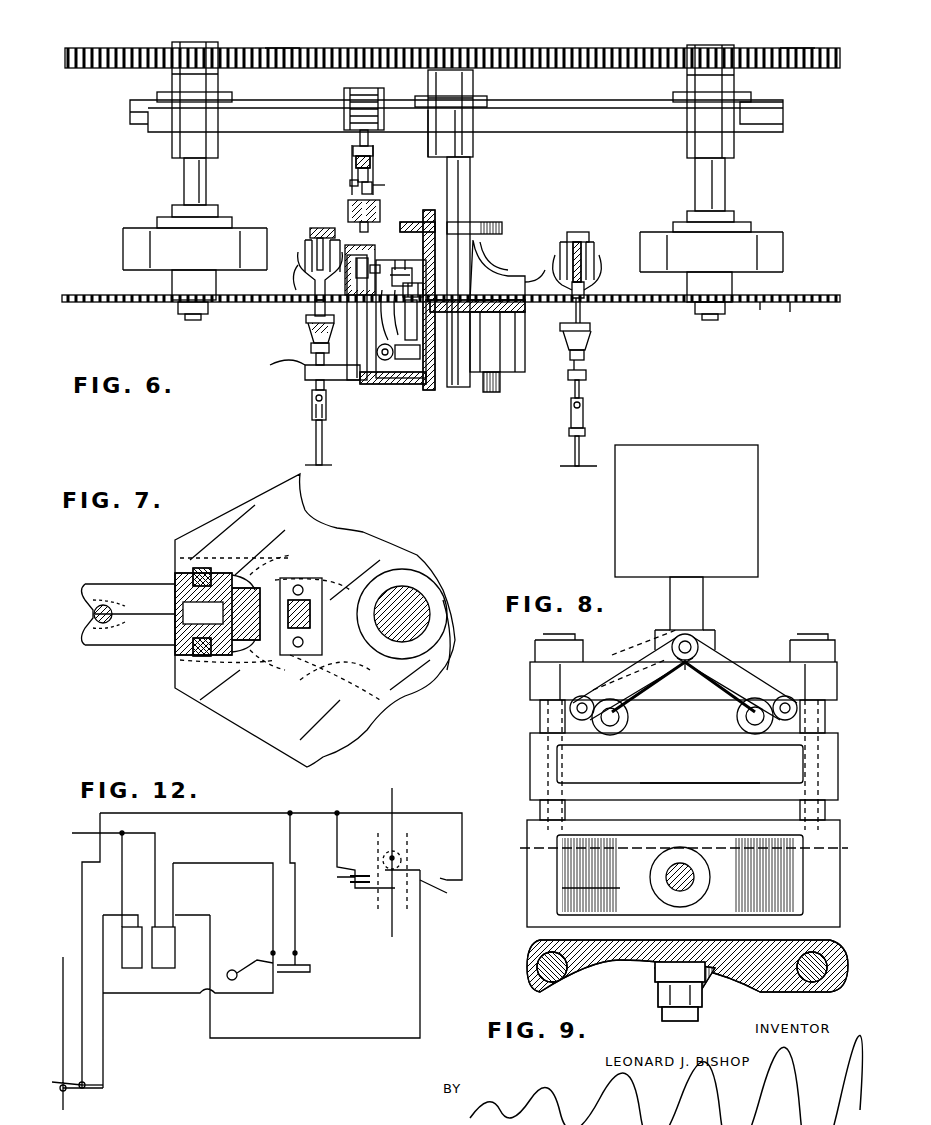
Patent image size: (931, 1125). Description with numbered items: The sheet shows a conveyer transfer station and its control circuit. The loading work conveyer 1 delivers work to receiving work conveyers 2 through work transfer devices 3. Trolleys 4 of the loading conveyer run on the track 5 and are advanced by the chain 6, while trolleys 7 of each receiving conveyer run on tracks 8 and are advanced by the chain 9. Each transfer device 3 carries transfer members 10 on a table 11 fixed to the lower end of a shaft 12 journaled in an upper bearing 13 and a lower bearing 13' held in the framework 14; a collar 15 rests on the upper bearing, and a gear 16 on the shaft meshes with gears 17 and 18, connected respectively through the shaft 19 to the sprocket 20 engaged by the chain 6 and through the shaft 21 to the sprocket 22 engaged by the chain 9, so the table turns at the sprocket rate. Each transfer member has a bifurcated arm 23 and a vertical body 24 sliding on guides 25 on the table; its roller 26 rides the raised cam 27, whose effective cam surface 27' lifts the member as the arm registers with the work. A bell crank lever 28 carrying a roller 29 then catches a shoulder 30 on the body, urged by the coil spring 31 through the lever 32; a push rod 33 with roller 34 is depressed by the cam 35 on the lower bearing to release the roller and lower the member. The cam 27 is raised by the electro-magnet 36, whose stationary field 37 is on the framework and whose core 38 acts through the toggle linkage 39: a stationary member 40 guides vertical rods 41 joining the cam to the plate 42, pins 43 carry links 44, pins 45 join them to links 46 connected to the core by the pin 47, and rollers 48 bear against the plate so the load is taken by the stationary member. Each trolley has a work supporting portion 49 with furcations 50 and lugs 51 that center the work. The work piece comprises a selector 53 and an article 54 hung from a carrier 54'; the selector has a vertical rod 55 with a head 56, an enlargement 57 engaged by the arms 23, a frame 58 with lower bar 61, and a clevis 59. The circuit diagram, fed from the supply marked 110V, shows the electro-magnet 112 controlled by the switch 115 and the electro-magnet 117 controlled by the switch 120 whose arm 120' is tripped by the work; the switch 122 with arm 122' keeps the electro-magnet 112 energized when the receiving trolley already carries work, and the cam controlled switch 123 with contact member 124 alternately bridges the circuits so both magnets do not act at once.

In FIG. 6, the loading work conveyer 1 is at (126, 195).
In FIG. 6, the receiving work conveyers 2 is at (780, 198).
In FIG. 6, the work transfer devices 3 is at (499, 205).
In FIG. 6, the trolleys of the loading conveyer 4 is at (300, 240).
In FIG. 6, the track 5 is at (320, 228).
In FIG. 6, the chain 6 is at (315, 310).
In FIG. 6, the trolleys of the receiving conveyers 7 is at (450, 300).
In FIG. 6, the tracks 8 is at (582, 242).
In FIG. 6, the chain 9 is at (584, 290).
In FIG. 8, the chain 9 is at (849, 849).
In FIG. 6, the transfer members 10 is at (493, 393).
In FIG. 7, the transfer members 10 is at (129, 578).
In FIG. 6, the table 11 is at (525, 306).
In FIG. 7, the table 11 is at (225, 540).
In FIG. 6, the shaft 12 is at (452, 387).
In FIG. 7, the shaft 12 is at (415, 613).
In FIG. 6, the upper bearing 13 is at (469, 133).
In FIG. 6, the lower bearing 13' is at (501, 265).
In FIG. 7, the lower bearing 13' is at (458, 610).
In FIG. 6, the framework 14 is at (783, 127).
In FIG. 6, the collar 15 is at (473, 86).
In FIG. 6, the gear 16 is at (552, 48).
In FIG. 6, the gear 17 is at (275, 48).
In FIG. 6, the gear 18 is at (788, 48).
In FIG. 6, the shaft 19 is at (184, 178).
In FIG. 6, the sprocket 20 is at (130, 302).
In FIG. 6, the shaft 21 is at (725, 176).
In FIG. 6, the sprocket 22 is at (790, 316).
In FIG. 6, the radially outwardly extending arms 23 is at (316, 383).
In FIG. 7, the radially outwardly extending arms 23 is at (120, 640).
In FIG. 6, the vertically extending body 24 is at (357, 355).
In FIG. 7, the vertically extending body 24 is at (185, 575).
In FIG. 7, the vertically extending guides 25 is at (195, 655).
In FIG. 6, the roller 26 is at (365, 255).
In FIG. 8, the roller 26 is at (682, 855).
In FIG. 9, the roller 26 is at (705, 995).
In FIG. 6, the cam 27 is at (352, 280).
In FIG. 8, the cam 27 is at (555, 891).
In FIG. 9, the cam 27 is at (658, 973).
In FIG. 8, the effective cam surface 27' is at (684, 873).
In FIG. 9, the effective cam surface 27' is at (687, 953).
In FIG. 6, the lever 28 is at (385, 360).
In FIG. 6, the roller 29 is at (390, 300).
In FIG. 7, the roller 29 is at (290, 685).
In FIG. 6, the shoulder 30 is at (490, 315).
In FIG. 6, the coil spring 31 is at (435, 370).
In FIG. 6, the lever 32 is at (408, 330).
In FIG. 6, the push rod 33 is at (423, 290).
In FIG. 7, the push rod 33 is at (310, 625).
In FIG. 6, the roller 34 is at (440, 250).
In FIG. 6, the cam 35 is at (525, 300).
In FIG. 6, the electro-magnet 36 is at (390, 108).
In FIG. 8, the electro-magnet 36 is at (757, 497).
In FIG. 6, the stationary field 37 is at (344, 112).
In FIG. 8, the stationary field 37 is at (758, 455).
In FIG. 6, the vertically movable core 38 is at (368, 140).
In FIG. 8, the vertically movable core 38 is at (703, 605).
In FIG. 6, the toggle linkage 39 is at (370, 172).
In FIG. 8, the toggle linkage 39 is at (643, 643).
In FIG. 6, the stationary member 40 is at (380, 210).
In FIG. 8, the stationary member 40 is at (530, 762).
In FIG. 8, the vertical rods 41 is at (540, 712).
In FIG. 8, the plate 42 is at (530, 680).
In FIG. 6, the pins 43 is at (372, 190).
In FIG. 8, the pins 43 is at (740, 716).
In FIG. 6, the links 44 is at (350, 185).
In FIG. 8, the links 44 is at (780, 740).
In FIG. 6, the pins 45 is at (356, 165).
In FIG. 8, the pins 45 is at (797, 710).
In FIG. 6, the links 46 is at (353, 150).
In FIG. 8, the links 46 is at (728, 670).
In FIG. 6, the pin 47 is at (373, 155).
In FIG. 8, the pin 47 is at (683, 665).
In FIG. 6, the rollers 48 is at (385, 185).
In FIG. 8, the rollers 48 is at (625, 712).
In FIG. 6, the work supporting portion 49 is at (303, 344).
In FIG. 6, the furcations 50 is at (306, 320).
In FIG. 6, the lugs 51 is at (584, 360).
In FIG. 6, the selector 53 is at (312, 405).
In FIG. 6, the article 54 is at (471, 460).
In FIG. 6, the carrier 54' is at (297, 465).
In FIG. 6, the vertical rod 55 is at (300, 283).
In FIG. 6, the head 56 is at (568, 375).
In FIG. 6, the enlargement 57 is at (274, 370).
In FIG. 6, the frame 58 is at (575, 388).
In FIG. 6, the clevis 59 is at (322, 435).
In FIG. 6, the lower bar 61 is at (585, 432).
In FIG. 12, the power supply 110V is at (261, 950).
In FIG. 12, the electro-magnet 112 is at (175, 960).
In FIG. 12, the switch 115 is at (385, 855).
In FIG. 12, the electro-magnet 117 is at (132, 968).
In FIG. 12, the switch 120 is at (74, 1041).
In FIG. 12, the arm 120' is at (109, 1101).
In FIG. 12, the switch 122 is at (404, 896).
In FIG. 12, the arm 122' is at (442, 907).
In FIG. 12, the cam controlled switch 123 is at (262, 958).
In FIG. 12, the contact member 124 is at (287, 975).